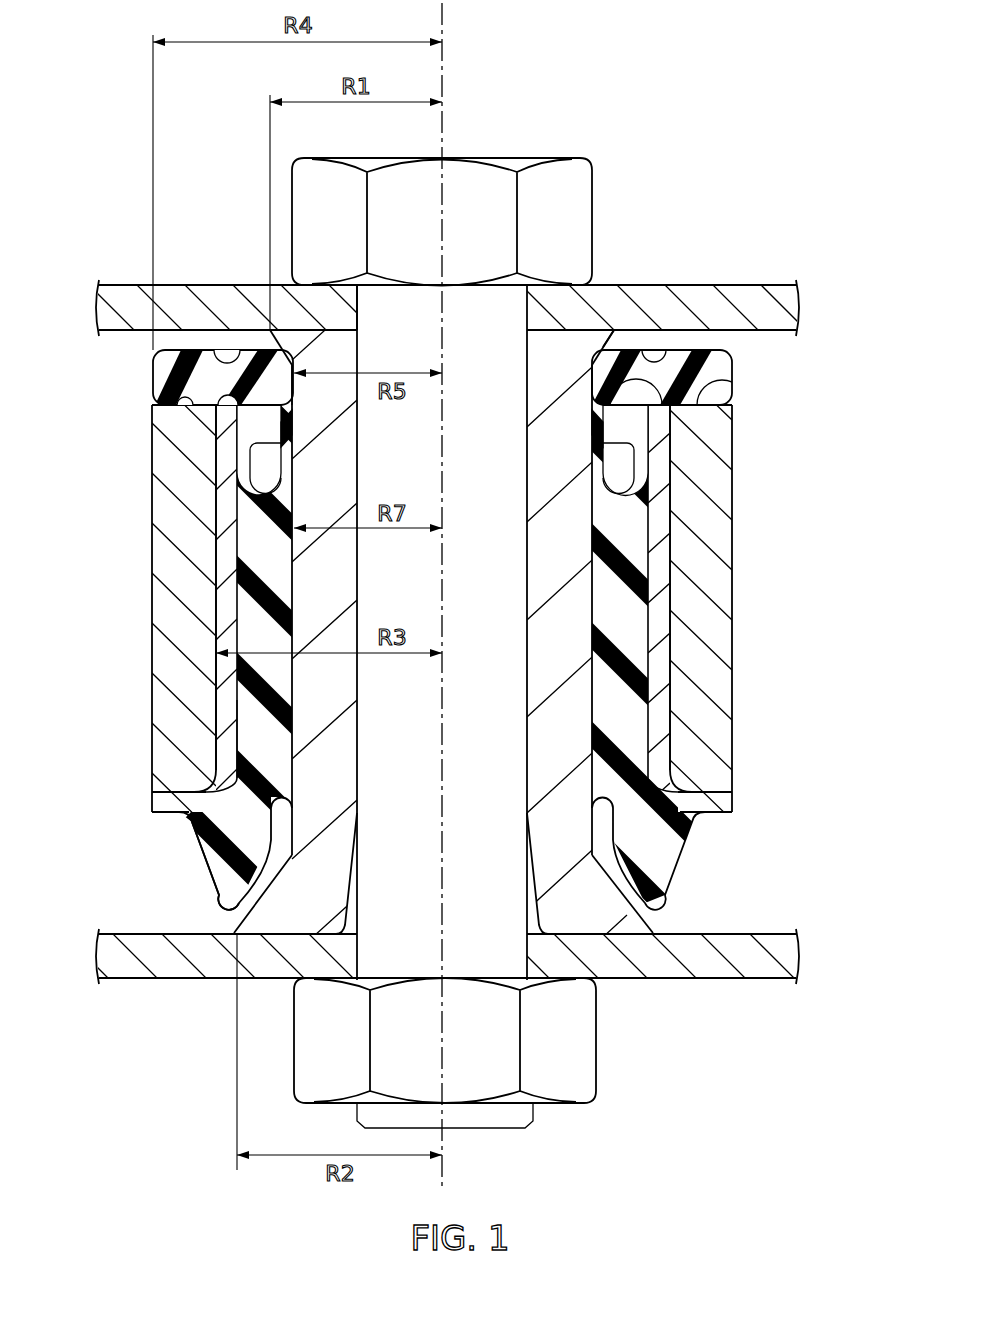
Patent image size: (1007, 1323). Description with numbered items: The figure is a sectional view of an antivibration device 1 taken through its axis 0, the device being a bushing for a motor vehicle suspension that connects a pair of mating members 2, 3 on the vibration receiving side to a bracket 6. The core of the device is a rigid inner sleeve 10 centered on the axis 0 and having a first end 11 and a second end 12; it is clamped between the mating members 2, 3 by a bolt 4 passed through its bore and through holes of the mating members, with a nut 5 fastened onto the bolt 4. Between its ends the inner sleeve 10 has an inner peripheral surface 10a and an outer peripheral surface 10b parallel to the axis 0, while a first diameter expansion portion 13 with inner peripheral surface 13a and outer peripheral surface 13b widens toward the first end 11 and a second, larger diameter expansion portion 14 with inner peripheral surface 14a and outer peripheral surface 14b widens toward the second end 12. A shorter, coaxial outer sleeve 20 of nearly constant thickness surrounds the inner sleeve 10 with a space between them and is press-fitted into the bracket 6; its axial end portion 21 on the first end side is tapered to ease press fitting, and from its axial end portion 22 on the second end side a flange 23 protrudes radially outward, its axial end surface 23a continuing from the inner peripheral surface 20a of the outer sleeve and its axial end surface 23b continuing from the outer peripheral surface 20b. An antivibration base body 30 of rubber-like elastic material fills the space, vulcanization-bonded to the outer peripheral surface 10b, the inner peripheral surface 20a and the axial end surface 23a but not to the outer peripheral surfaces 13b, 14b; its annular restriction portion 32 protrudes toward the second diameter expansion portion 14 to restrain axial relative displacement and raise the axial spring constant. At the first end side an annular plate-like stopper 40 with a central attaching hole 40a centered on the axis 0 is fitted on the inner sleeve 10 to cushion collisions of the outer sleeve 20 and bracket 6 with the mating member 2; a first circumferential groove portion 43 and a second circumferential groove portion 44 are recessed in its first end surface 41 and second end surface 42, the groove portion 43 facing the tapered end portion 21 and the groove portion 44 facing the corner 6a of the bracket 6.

The axis 0 is at (442, 1177).
The antivibration device 1 is at (818, 472).
The mating member 2 is at (220, 300).
The mating member 3 is at (752, 978).
The bolt 4 is at (568, 213).
The nut 5 is at (568, 1083).
The bracket 6 is at (720, 585).
The corner 6a is at (745, 385).
The inner sleeve 10 is at (434, 646).
The inner peripheral surface 10a is at (527, 690).
The outer peripheral surface 10b is at (292, 582).
The first end 11 is at (343, 317).
The second end 12 is at (280, 936).
The first diameter expansion portion 13 is at (547, 343).
The inner peripheral surface 13a is at (357, 340).
The outer peripheral surface 13b is at (623, 340).
The second diameter expansion portion 14 is at (323, 897).
The inner peripheral surface 14a is at (527, 890).
The outer peripheral surface 14b is at (657, 920).
The outer sleeve 20 is at (179, 598).
The inner peripheral surface 20a is at (254, 713).
The outer peripheral surface 20b is at (215, 712).
The axial end portion 21 is at (592, 420).
The axial end portion 22 is at (663, 780).
The flange 23 is at (185, 812).
The axial end surface 23a is at (164, 812).
The axial end surface 23b is at (168, 768).
The antivibration base body 30 is at (640, 615).
The restriction portion 32 is at (660, 863).
The stopper 40 is at (182, 322).
The attaching hole 40a is at (292, 385).
The first end surface 41 is at (212, 350).
The second end surface 42 is at (205, 433).
The first circumferential groove portion 43 is at (313, 430).
The second circumferential groove portion 44 is at (153, 403).